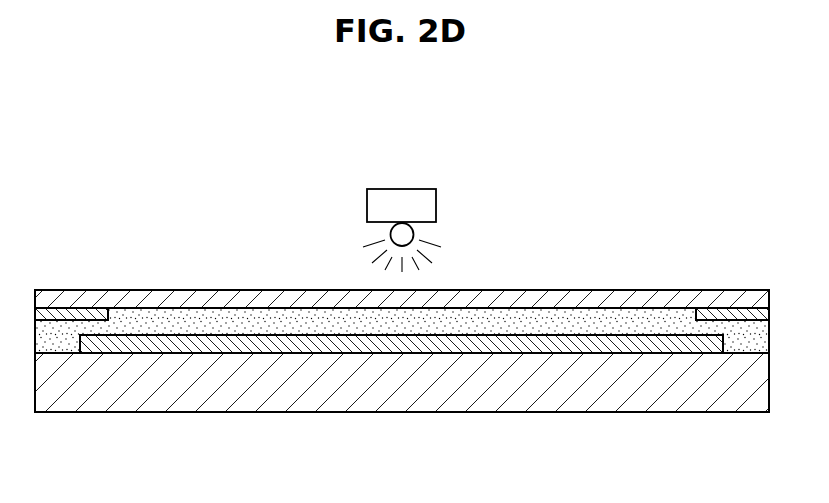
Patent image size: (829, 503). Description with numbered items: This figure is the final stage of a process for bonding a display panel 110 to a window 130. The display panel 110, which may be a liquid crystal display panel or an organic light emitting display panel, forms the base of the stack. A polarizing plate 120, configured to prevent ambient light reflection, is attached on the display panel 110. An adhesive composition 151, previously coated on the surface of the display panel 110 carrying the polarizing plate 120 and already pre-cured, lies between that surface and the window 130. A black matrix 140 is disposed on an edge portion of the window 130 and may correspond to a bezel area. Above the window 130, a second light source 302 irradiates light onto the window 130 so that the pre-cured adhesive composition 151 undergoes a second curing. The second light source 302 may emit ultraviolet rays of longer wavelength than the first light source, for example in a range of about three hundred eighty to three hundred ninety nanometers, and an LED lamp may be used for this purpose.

The display panel 110 is at (467, 380).
The polarizing plate 120 is at (308, 343).
The window 130 is at (236, 303).
The black matrix 140 is at (68, 312).
The adhesive composition 151 is at (563, 320).
The second light source 302 is at (401, 205).